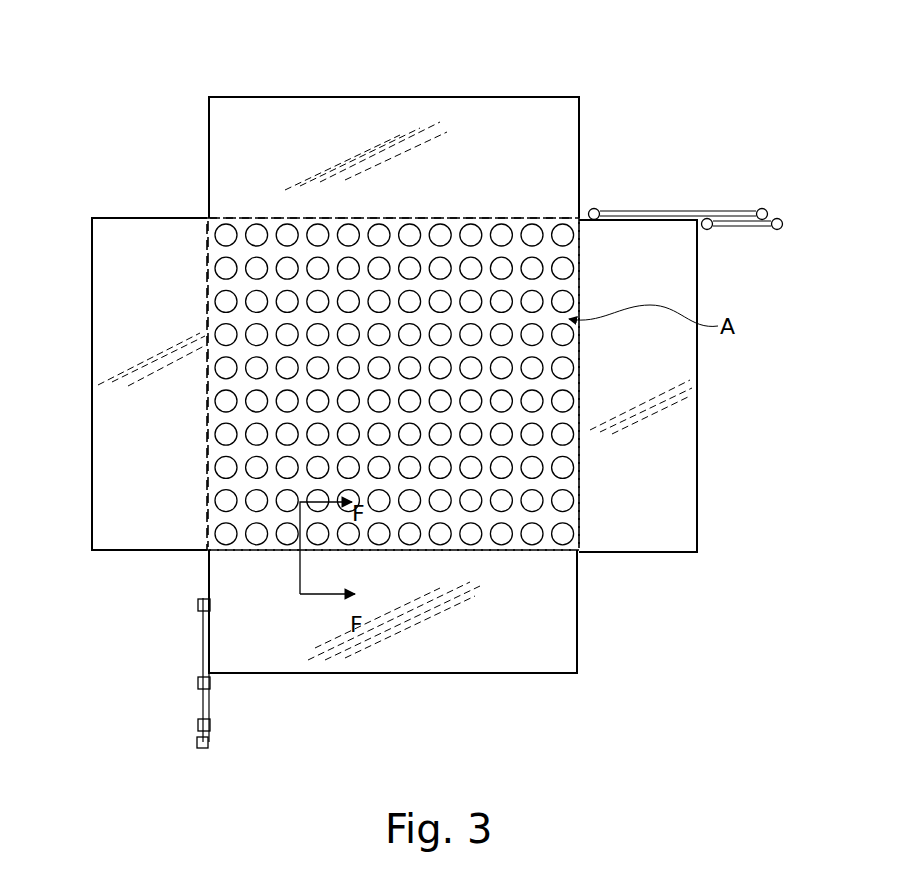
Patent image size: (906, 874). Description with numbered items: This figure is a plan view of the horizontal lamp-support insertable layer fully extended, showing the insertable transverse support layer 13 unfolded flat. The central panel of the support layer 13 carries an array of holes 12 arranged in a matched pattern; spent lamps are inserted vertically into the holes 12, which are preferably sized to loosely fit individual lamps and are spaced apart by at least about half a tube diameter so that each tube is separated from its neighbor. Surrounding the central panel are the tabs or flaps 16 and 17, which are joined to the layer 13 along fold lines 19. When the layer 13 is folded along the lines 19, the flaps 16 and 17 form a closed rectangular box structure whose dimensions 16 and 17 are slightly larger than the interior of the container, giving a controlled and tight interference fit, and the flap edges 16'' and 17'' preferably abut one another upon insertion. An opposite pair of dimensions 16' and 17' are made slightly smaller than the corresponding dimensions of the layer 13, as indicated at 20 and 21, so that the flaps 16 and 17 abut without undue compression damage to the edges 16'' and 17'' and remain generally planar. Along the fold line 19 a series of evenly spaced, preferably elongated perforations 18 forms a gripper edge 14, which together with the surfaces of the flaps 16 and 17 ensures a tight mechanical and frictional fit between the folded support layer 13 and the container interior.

The holes 12 is at (506, 553).
The insertable transverse support layer 13 is at (582, 552).
The gripper edge 14 is at (201, 341).
The tabs (flaps) 16 is at (127, 355).
The dimension of flap 16' is at (63, 384).
The flap edge 16'' is at (149, 590).
The tabs (flaps) 17 is at (368, 131).
The dimension of flap 17' is at (394, 67).
The flap edge 17'' is at (175, 157).
The perforations 18 is at (502, 214).
The fold line 19 is at (418, 213).
The dimension difference 20 is at (220, 673).
The dimension difference 21 is at (686, 210).